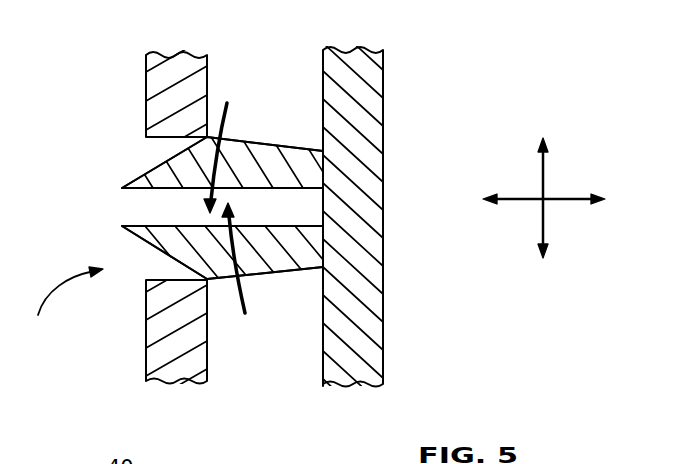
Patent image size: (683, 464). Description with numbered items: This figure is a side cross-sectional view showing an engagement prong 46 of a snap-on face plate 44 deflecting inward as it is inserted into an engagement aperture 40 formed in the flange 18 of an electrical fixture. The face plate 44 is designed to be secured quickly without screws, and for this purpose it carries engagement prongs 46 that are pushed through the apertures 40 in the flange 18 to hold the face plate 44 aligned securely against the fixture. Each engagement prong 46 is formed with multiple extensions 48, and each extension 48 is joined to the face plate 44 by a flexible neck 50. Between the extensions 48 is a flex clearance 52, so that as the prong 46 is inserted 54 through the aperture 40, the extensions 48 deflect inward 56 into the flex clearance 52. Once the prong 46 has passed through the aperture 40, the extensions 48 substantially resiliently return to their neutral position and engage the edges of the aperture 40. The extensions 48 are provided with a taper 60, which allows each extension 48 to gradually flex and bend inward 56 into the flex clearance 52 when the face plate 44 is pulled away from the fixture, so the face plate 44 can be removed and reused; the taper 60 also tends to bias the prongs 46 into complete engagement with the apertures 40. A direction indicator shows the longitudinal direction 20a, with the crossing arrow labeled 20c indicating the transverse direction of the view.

The flange 18 is at (146, 86).
The aperture 40 is at (160, 130).
The face plate 44 is at (373, 107).
The engagement prong 46 is at (138, 258).
The extension 48 is at (160, 170).
The flexible neck 50 is at (298, 165).
The flex clearance 52 is at (147, 208).
The insertion direction 54 is at (61, 308).
The inward deflection 56 is at (226, 117).
The taper 60 is at (271, 130).
The longitudinal direction 20a is at (545, 167).
The lateral direction 20c is at (567, 202).